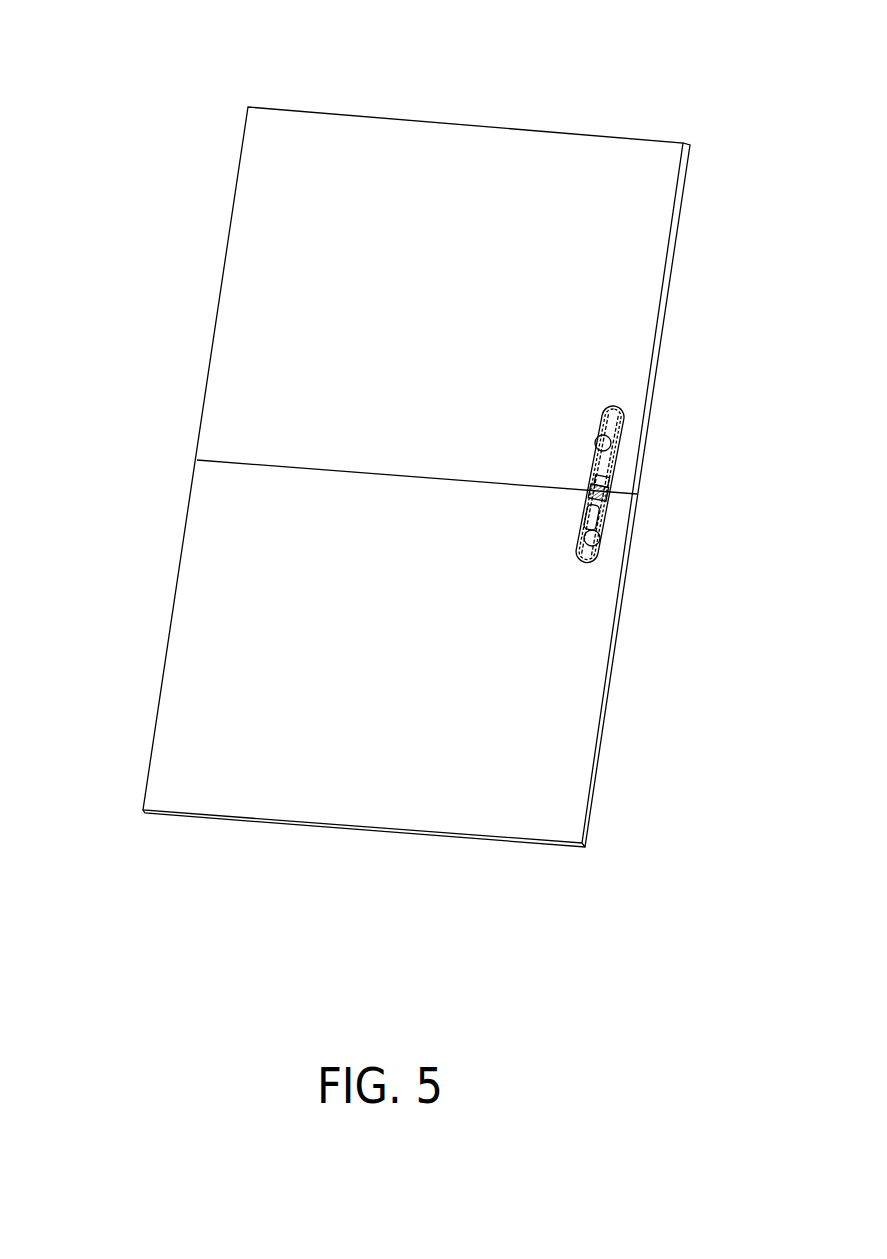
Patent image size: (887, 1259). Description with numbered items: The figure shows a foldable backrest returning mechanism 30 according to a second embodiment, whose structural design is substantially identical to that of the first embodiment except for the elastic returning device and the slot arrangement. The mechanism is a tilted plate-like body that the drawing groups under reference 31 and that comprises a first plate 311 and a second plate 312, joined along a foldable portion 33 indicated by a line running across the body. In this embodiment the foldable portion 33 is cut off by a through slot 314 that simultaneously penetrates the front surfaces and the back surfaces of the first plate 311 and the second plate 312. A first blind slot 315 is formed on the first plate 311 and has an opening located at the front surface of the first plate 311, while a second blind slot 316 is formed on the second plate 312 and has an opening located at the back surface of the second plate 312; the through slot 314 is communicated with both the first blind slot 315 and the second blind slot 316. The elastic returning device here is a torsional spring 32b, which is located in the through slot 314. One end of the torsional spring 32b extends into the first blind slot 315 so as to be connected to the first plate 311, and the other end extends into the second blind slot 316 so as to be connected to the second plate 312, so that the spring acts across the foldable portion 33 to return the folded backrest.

The foldable backrest returning mechanism 30 is at (110, 49).
The display panel 31 is at (80, 347).
The first plate 311 is at (240, 502).
The second plate 312 is at (257, 432).
The through slot 314 is at (571, 464).
The first blind slot 315 is at (616, 554).
The second blind slot 316 is at (630, 431).
The torsional spring 32b is at (590, 495).
The foldable portion 33 is at (375, 466).